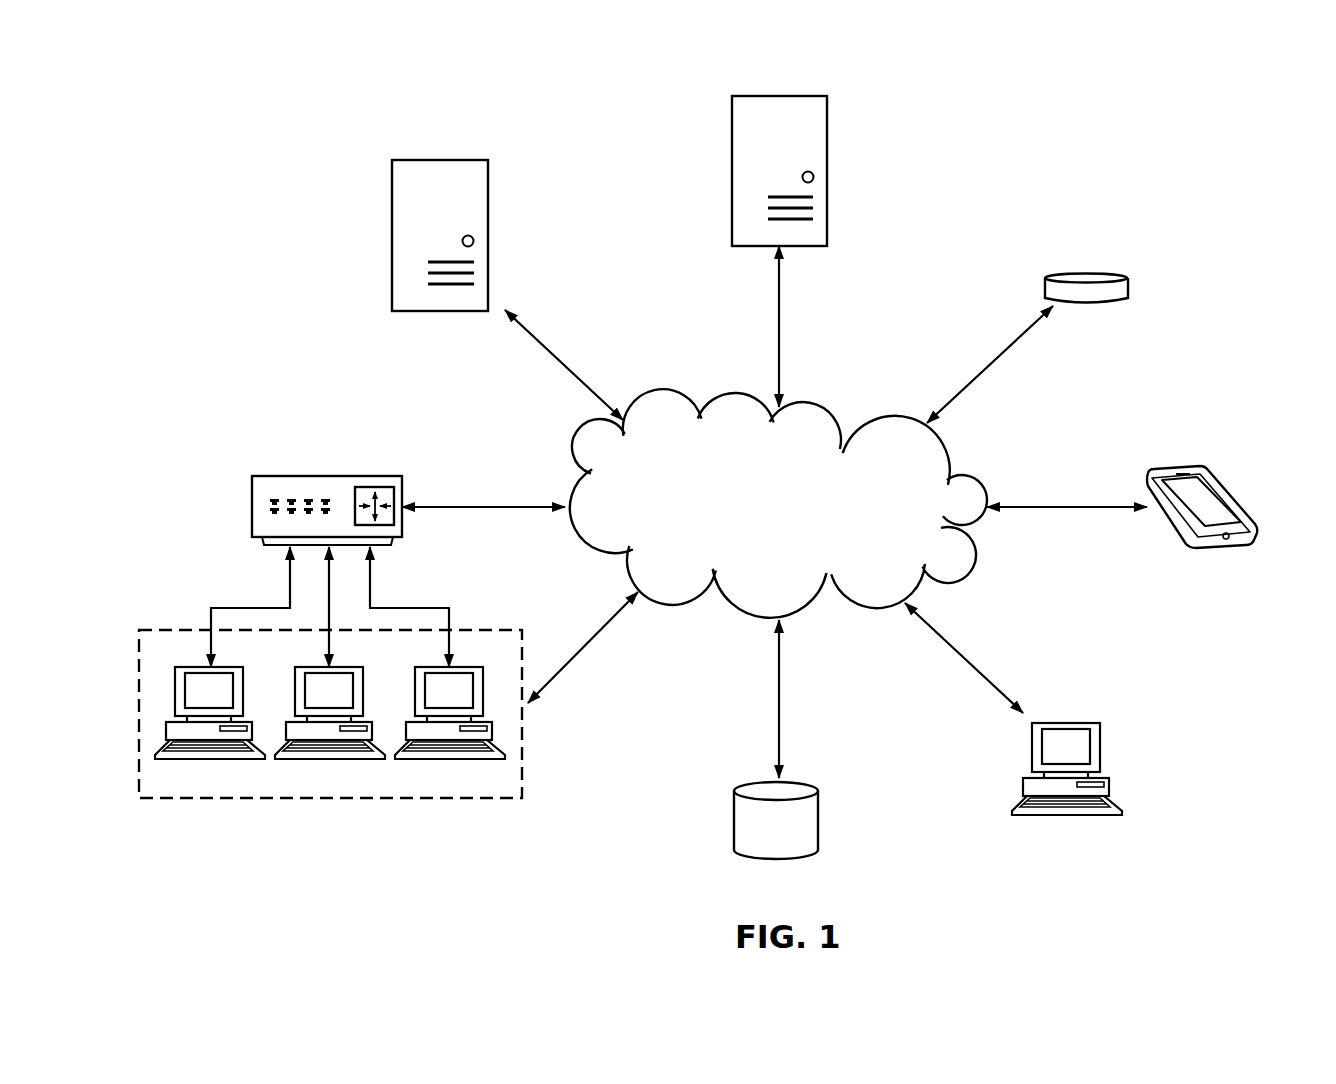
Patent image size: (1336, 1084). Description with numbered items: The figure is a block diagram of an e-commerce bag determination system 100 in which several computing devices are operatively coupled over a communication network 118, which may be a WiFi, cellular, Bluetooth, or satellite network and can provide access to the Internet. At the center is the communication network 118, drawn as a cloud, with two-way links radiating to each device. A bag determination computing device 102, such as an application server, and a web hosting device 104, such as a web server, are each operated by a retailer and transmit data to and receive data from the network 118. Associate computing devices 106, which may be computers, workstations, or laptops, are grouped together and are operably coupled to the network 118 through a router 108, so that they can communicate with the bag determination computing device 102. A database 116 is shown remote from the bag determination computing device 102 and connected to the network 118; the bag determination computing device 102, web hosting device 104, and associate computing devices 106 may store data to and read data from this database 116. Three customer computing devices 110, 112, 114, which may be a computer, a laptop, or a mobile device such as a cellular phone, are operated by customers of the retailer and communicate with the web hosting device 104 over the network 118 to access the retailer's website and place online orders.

The bag determination system 100 is at (1172, 84).
The bag determination computing device 102 is at (803, 95).
The web hosting device 104 is at (414, 158).
The associate computing device 106 is at (177, 630).
The router 108 is at (277, 475).
The customer computing device 110 is at (1100, 275).
The customer computing device 112 is at (1228, 497).
The customer computing device 114 is at (1090, 722).
The database 116 is at (805, 786).
The communication network 118 is at (818, 402).